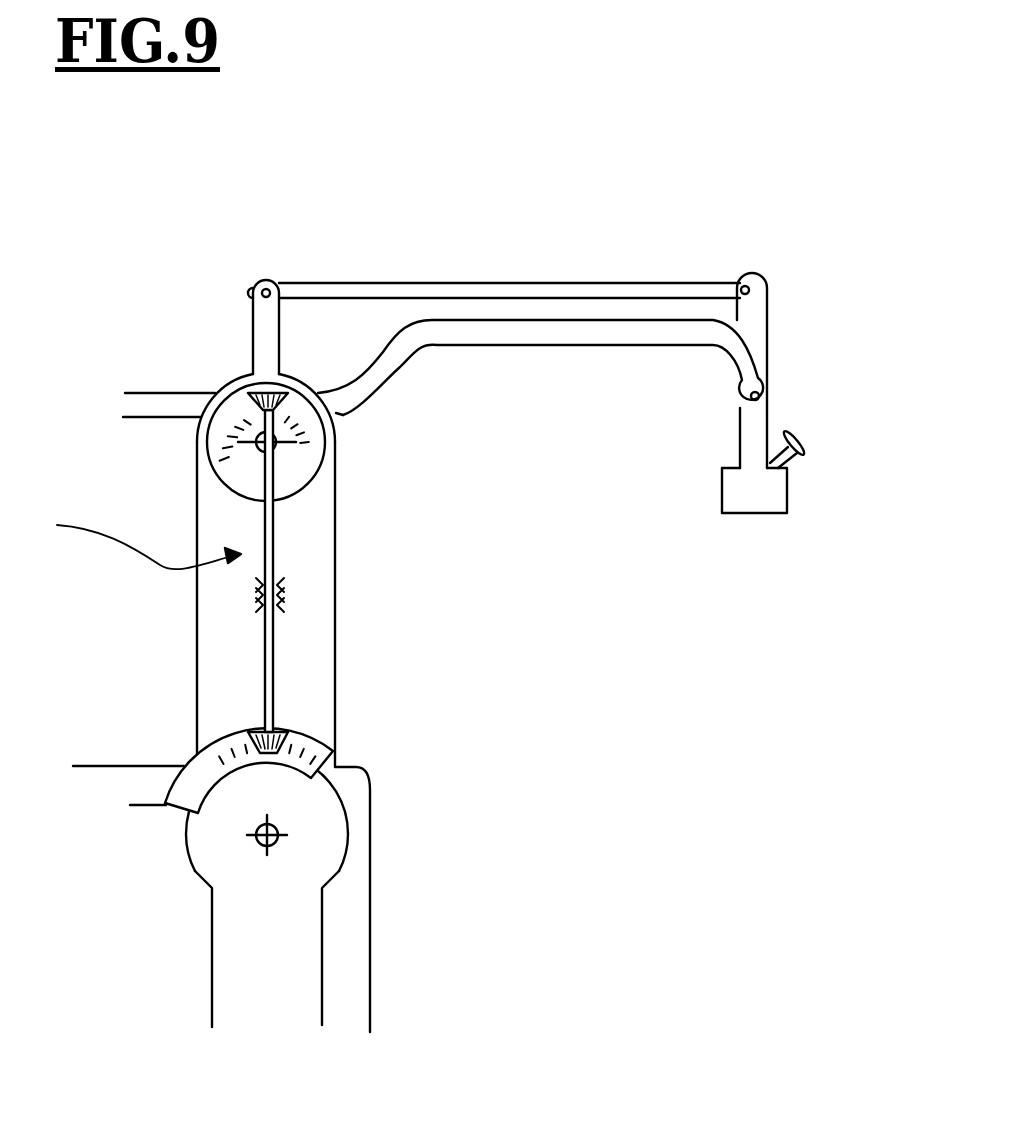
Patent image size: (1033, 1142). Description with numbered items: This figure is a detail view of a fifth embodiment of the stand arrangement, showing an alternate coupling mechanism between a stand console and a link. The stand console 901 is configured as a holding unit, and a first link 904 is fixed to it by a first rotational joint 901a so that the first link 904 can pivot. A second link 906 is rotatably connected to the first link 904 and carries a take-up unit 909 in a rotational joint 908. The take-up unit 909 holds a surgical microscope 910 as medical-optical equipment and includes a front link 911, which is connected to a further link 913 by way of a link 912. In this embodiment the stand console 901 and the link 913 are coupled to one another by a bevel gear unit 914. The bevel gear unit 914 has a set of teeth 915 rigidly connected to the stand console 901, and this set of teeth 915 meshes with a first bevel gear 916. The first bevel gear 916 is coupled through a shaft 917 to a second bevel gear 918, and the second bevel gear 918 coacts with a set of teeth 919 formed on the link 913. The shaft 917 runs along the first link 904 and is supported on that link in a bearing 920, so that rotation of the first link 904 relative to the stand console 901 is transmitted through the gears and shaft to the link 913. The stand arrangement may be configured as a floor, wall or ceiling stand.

The stand console 901 is at (93, 790).
The first rotational joint 901a is at (280, 828).
The first link 904 is at (300, 620).
The second link 906 is at (567, 346).
The rotational joint 908 is at (763, 387).
The take-up unit 909 is at (747, 447).
The surgical microscope 910 is at (757, 502).
The front link 911 is at (754, 321).
The link 912 is at (505, 298).
The link 913 is at (262, 320).
The bevel gear unit 914 is at (122, 540).
The set of teeth 915 is at (323, 755).
The first bevel gear 916 is at (280, 731).
The shaft 917 is at (275, 673).
The second bevel gear 918 is at (288, 402).
The set of teeth 919 is at (225, 412).
The bearing 920 is at (281, 580).